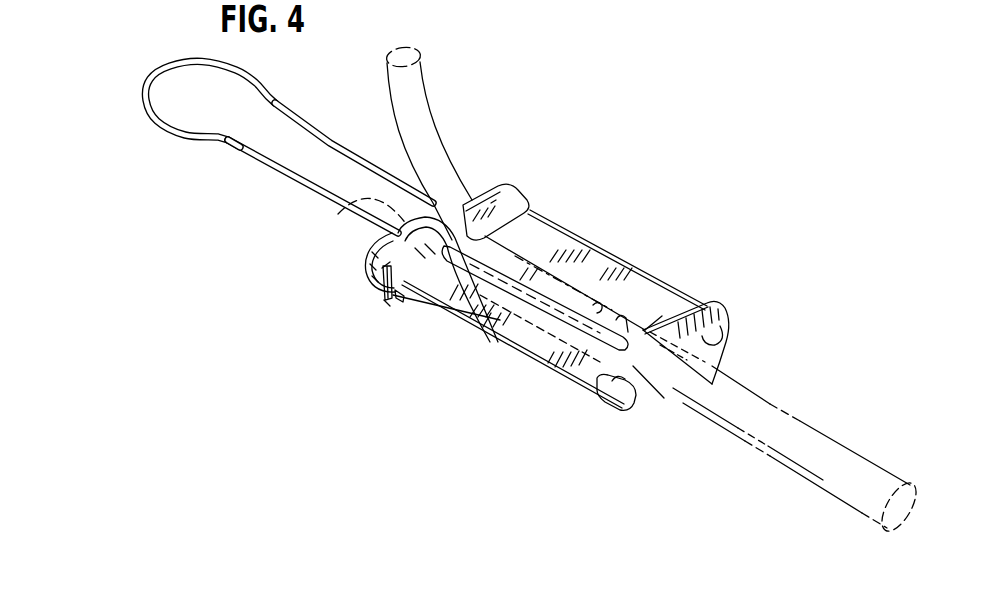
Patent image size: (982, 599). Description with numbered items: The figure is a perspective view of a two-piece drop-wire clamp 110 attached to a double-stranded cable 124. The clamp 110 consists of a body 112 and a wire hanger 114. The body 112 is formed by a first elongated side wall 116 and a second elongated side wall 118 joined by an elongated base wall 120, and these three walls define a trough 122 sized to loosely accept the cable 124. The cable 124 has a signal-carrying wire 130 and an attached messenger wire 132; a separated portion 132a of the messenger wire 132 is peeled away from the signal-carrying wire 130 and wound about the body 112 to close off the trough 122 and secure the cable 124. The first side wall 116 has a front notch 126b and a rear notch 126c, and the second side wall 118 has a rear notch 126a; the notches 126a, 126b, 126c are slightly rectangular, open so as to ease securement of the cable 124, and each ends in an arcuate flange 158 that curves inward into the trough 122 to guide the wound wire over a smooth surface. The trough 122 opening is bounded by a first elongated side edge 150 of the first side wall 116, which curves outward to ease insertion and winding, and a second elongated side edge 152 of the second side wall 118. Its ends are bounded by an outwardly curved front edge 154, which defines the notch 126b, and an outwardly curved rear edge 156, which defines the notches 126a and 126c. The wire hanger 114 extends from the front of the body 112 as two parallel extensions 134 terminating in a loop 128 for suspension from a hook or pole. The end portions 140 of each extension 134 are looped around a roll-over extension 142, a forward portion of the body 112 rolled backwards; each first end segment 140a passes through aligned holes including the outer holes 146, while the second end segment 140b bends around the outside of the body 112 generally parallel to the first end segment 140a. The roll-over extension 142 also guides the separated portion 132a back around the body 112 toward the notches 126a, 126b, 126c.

The two-piece clamp 110 is at (613, 232).
The body 112 is at (637, 299).
The wire hanger 114 is at (226, 141).
The first elongated side wall 116 is at (543, 247).
The second elongated side wall 118 is at (530, 342).
The elongated base wall 120 is at (717, 332).
The trough 122 is at (700, 362).
The signal-carrying cable 124 is at (882, 464).
The rear notch 126a is at (643, 387).
The front notch 126b is at (465, 297).
The rear notch 126c is at (663, 307).
The loop 128 is at (147, 78).
The signal-carrying wire 130 is at (920, 503).
The messenger wire 132 is at (857, 513).
The separated portion of the messenger wire 132a is at (340, 212).
The parallel extensions 134 is at (313, 126).
The end portions 140 is at (378, 296).
The first end segment 140a is at (387, 308).
The second end segment 140b is at (380, 268).
The roll-over extension 142 is at (373, 238).
The holes 146 is at (412, 306).
The first elongated side edge 150 is at (477, 330).
The second elongated side edge 152 is at (580, 383).
The front edge 154 is at (487, 186).
The rear edge 156 is at (710, 300).
The arcuate flange 158 is at (602, 402).